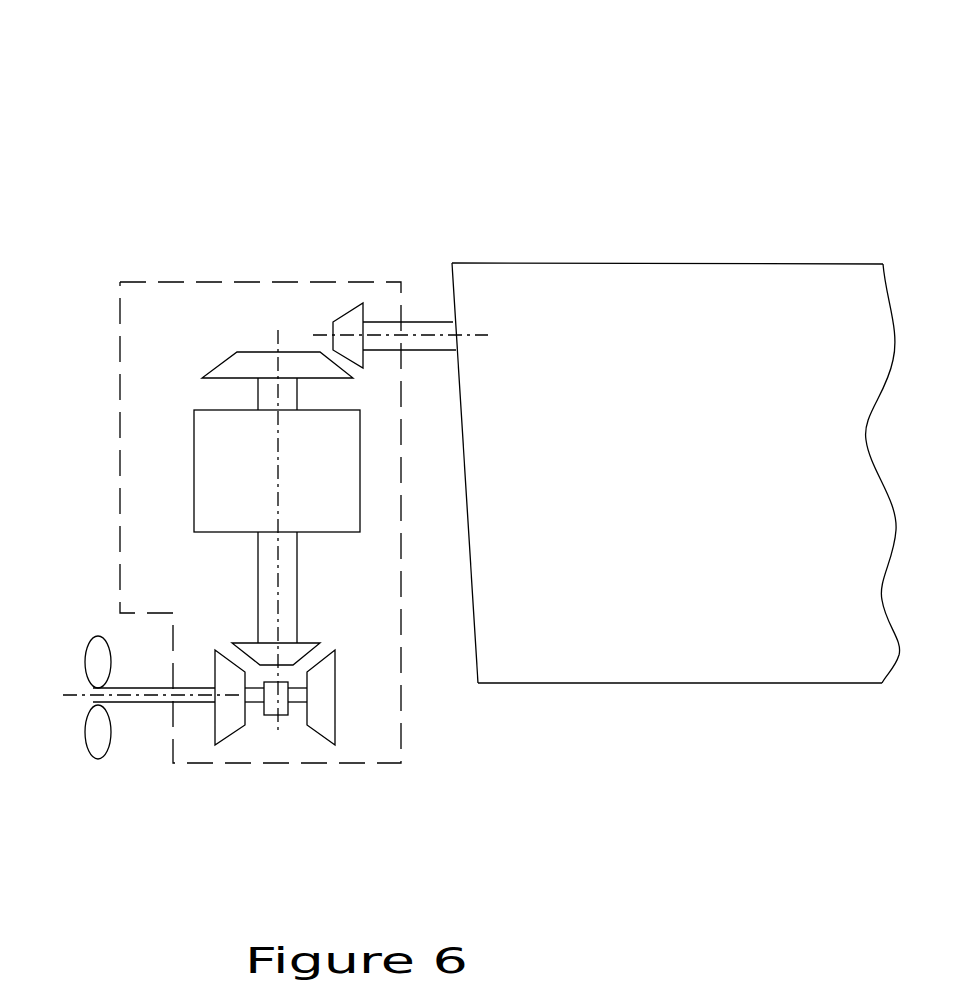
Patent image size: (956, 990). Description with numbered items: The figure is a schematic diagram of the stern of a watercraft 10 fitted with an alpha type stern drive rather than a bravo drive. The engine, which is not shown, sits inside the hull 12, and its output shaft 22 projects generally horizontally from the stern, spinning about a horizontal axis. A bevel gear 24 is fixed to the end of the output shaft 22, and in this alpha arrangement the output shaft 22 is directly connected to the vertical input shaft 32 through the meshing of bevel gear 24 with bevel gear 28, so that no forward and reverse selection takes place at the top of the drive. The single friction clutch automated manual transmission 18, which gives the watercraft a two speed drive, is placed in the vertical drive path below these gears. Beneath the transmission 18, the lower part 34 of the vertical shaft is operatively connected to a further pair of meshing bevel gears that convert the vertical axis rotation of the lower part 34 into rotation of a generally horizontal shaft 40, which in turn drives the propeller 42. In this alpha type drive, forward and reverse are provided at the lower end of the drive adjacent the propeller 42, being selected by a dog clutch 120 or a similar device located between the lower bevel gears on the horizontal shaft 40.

The watercraft 10 is at (388, 125).
The hull 12 is at (676, 473).
The single friction clutch automated manual transmission 18 is at (277, 471).
The output shaft 22 is at (447, 241).
The bevel gear 24 is at (287, 250).
The reverse bevel gear 28 is at (205, 364).
The vertical input shaft 32 is at (247, 397).
The lower part of the vertical shaft 34 is at (248, 587).
The horizontal shaft 40 is at (159, 714).
The propeller 42 is at (93, 773).
The dog clutch 120 is at (286, 724).